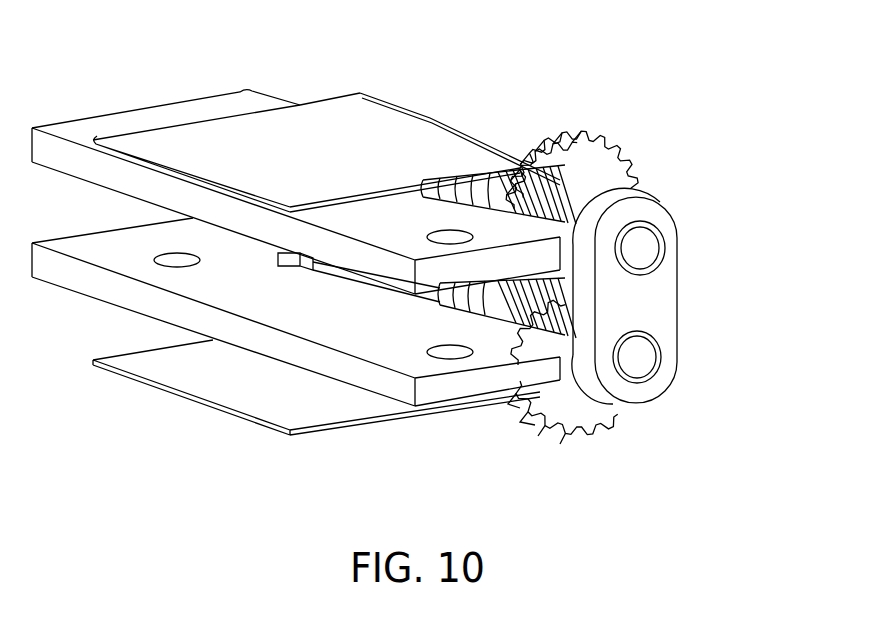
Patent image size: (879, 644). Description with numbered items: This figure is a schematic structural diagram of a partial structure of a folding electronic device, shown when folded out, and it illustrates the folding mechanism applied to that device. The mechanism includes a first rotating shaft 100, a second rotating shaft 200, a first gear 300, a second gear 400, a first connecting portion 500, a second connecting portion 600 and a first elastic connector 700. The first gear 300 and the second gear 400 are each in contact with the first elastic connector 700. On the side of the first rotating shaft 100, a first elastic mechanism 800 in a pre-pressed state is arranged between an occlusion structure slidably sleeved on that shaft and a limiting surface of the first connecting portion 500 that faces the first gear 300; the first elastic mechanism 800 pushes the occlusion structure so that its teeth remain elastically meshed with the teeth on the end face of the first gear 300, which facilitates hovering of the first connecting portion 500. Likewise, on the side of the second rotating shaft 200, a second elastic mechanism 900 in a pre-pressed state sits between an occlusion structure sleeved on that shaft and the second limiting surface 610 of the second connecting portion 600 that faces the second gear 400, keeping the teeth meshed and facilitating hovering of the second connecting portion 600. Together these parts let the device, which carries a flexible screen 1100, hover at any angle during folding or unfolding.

The first rotating shaft 100 is at (640, 256).
The second rotating shaft 200 is at (633, 348).
The first gear 300 is at (572, 165).
The second gear 400 is at (555, 327).
The first connecting portion 500 is at (86, 162).
The second connecting portion 600 is at (380, 338).
The second limiting surface 610 is at (300, 258).
The first elastic connector 700 is at (633, 210).
The first elastic mechanism 800 is at (481, 193).
The second elastic mechanism 900 is at (468, 298).
The flexible screen 1100 is at (253, 165).